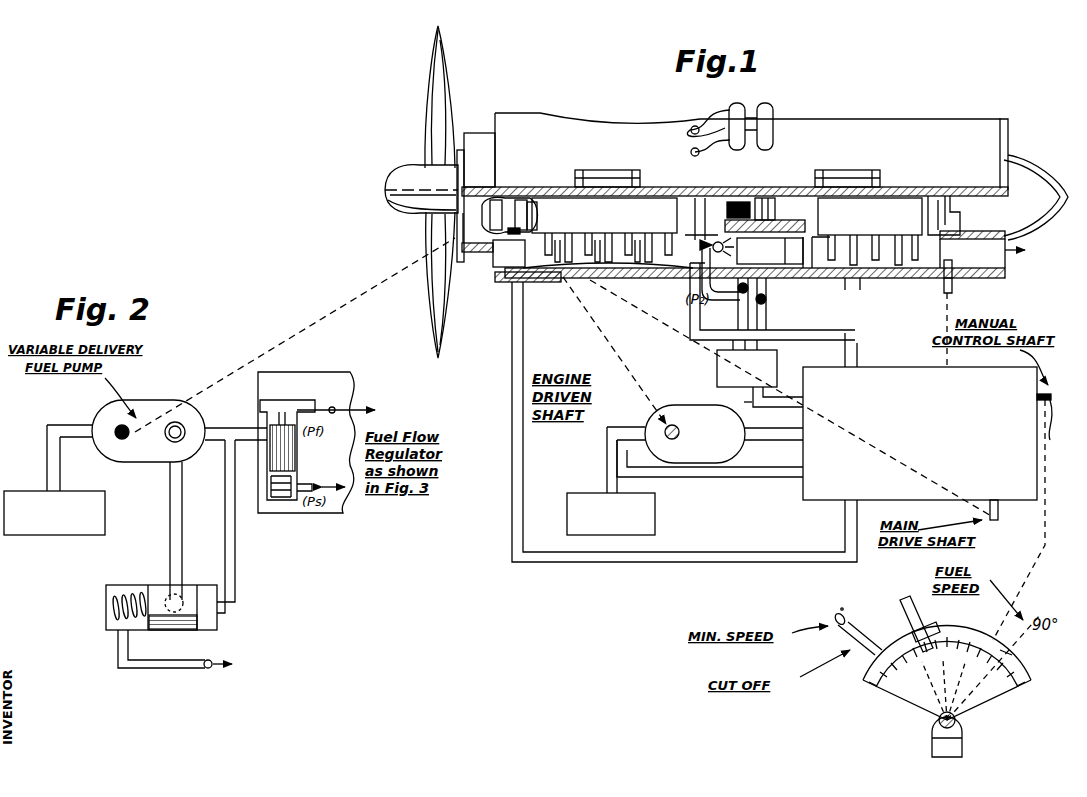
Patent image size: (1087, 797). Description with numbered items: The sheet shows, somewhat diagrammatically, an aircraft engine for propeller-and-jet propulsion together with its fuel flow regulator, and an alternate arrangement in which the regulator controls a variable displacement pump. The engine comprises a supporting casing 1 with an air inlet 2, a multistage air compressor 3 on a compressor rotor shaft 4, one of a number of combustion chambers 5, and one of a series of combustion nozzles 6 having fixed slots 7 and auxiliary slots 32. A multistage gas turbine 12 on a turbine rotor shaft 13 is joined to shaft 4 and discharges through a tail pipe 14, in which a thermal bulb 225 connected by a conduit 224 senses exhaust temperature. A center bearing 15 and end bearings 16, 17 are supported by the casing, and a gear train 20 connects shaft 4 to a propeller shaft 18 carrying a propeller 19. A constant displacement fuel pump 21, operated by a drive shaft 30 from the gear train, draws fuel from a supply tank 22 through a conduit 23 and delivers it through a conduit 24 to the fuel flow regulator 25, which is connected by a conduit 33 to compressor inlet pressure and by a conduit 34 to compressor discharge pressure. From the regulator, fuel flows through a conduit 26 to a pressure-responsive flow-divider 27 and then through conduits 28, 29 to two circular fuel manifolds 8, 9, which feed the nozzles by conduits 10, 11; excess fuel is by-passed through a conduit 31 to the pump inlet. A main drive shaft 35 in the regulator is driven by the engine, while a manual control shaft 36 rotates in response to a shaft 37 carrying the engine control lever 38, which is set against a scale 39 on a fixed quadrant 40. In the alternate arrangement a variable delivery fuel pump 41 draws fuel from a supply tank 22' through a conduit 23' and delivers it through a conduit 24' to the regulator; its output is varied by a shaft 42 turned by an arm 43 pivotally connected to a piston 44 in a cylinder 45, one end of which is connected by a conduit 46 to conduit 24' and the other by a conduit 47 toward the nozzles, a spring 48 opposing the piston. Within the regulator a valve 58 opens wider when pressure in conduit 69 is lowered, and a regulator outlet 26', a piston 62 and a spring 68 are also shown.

In FIG. 1, the supporting casing 1 is at (765, 195).
In FIG. 1, the air inlet 2 is at (496, 262).
In FIG. 1, the multistage air compressor 3 is at (612, 273).
In FIG. 1, the compressor rotor shaft 4 is at (604, 230).
In FIG. 1, the combustion chamber 5 is at (765, 242).
In FIG. 1, the combustion nozzle 6 is at (716, 241).
In FIG. 1, the fixed slot 7 is at (700, 245).
In FIG. 1, the fuel manifold 8 is at (737, 108).
In FIG. 1, the fuel manifold 9 is at (766, 108).
In FIG. 1, the conduit 10 is at (706, 296).
In FIG. 1, the conduit 11 is at (722, 300).
In FIG. 1, the multistage gas turbine 12 is at (858, 278).
In FIG. 1, the turbine rotor shaft 13 is at (862, 233).
In FIG. 1, the tail pipe 14 is at (1012, 258).
In FIG. 1, the center bearing 15 is at (748, 204).
In FIG. 1, the end bearing 16 is at (530, 202).
In FIG. 1, the end bearing 17 is at (945, 205).
In FIG. 1, the propeller shaft 18 is at (462, 150).
In FIG. 1, the propeller 19 is at (430, 298).
In FIG. 1, the gear train 20 is at (497, 212).
In FIG. 1, the constant displacement fuel pump 21 is at (660, 438).
In FIG. 1, the supply tank 22 is at (629, 514).
In FIG. 1, the conduit 23 is at (608, 460).
In FIG. 1, the conduit 24 is at (774, 445).
In FIG. 1, the fuel flow regulator 25 is at (866, 368).
In FIG. 2, the fuel flow regulator 25 is at (316, 373).
In FIG. 1, the conduit 26 is at (760, 409).
In FIG. 1, the pressure-responsive flow-divider 27 is at (777, 364).
In FIG. 1, the conduit 28 is at (760, 312).
In FIG. 1, the conduit 29 is at (762, 332).
In FIG. 1, the drive shaft 30 is at (660, 425).
In FIG. 1, the conduit 31 is at (745, 474).
In FIG. 1, the auxiliary slot 32 is at (712, 236).
In FIG. 1, the conduit 33 is at (523, 330).
In FIG. 1, the conduit 34 is at (840, 336).
In FIG. 1, the main drive shaft 35 is at (999, 512).
In FIG. 1, the manual control shaft 36 is at (1029, 517).
In FIG. 1, the shaft 37 is at (958, 725).
In FIG. 1, the engine control lever 38 is at (915, 612).
In FIG. 1, the scale 39 is at (1012, 657).
In FIG. 1, the fixed quadrant 40 is at (964, 636).
In FIG. 1, the conduit 224 is at (951, 288).
In FIG. 1, the thermal bulb 225 is at (950, 264).
In FIG. 2, the supply tank 22' is at (72, 513).
In FIG. 2, the conduit 23' is at (48, 458).
In FIG. 2, the conduit 24' is at (236, 425).
In FIG. 2, the metered fuel outlet 26' is at (336, 401).
In FIG. 2, the variable delivery fuel pump 41 is at (148, 414).
In FIG. 2, the shaft 42 is at (186, 425).
In FIG. 2, the arm 43 is at (182, 486).
In FIG. 2, the piston 44 is at (180, 631).
In FIG. 2, the cylinder 45 is at (132, 588).
In FIG. 2, the conduit 46 is at (235, 542).
In FIG. 2, the conduit 47 is at (135, 668).
In FIG. 2, the spring 48 is at (108, 606).
In FIG. 2, the valve 58 is at (287, 438).
In FIG. 2, the regulator piston 62 is at (296, 460).
In FIG. 2, the regulator spring 68 is at (280, 500).
In FIG. 2, the conduit 69 is at (300, 486).